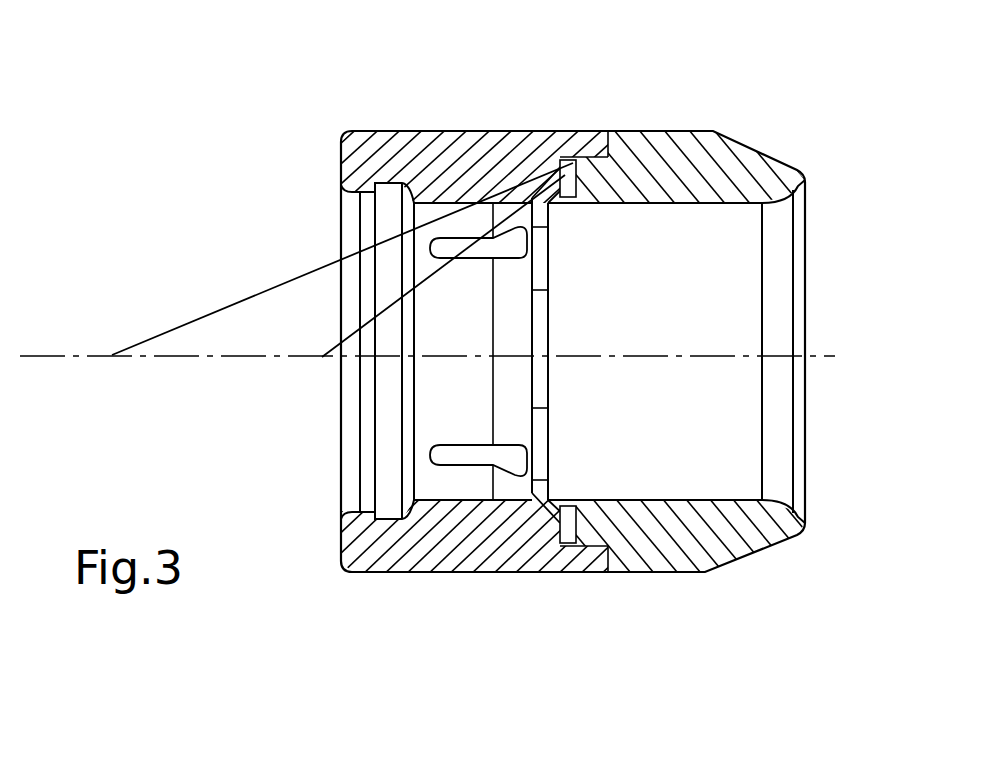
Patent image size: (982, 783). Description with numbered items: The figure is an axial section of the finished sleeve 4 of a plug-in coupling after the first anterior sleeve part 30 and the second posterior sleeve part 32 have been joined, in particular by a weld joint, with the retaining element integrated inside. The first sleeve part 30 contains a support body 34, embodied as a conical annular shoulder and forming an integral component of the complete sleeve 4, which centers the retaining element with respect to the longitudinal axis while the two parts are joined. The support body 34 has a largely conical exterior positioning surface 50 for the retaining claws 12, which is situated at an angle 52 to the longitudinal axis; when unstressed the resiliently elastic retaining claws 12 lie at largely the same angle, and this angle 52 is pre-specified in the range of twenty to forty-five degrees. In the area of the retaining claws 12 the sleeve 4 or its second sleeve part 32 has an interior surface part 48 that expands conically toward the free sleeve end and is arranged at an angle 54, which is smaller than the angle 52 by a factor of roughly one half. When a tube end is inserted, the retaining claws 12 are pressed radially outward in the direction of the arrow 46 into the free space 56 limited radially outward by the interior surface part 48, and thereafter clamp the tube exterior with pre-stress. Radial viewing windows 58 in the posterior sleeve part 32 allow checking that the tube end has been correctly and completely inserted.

The sleeve 4 is at (336, 161).
The retaining claws 12 is at (556, 178).
The first anterior sleeve part 30 is at (682, 160).
The second posterior sleeve part 32 is at (389, 158).
The support body 34 is at (562, 507).
The arrow 46 is at (537, 500).
The interior surface part 48 is at (497, 502).
The exterior positioning surface 50 is at (553, 520).
The angle 52 is at (343, 301).
The angle 54 is at (157, 392).
The free space 56 is at (533, 193).
The viewing windows 58 is at (447, 454).